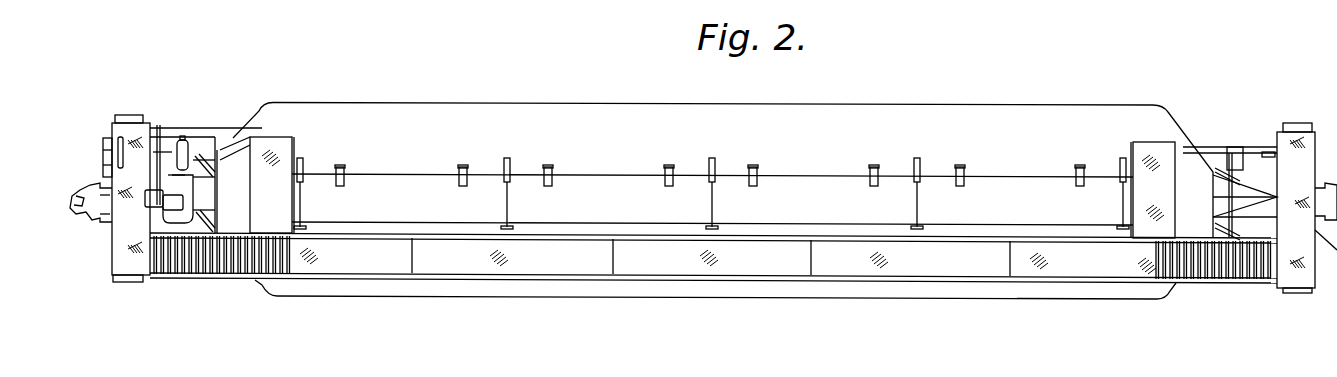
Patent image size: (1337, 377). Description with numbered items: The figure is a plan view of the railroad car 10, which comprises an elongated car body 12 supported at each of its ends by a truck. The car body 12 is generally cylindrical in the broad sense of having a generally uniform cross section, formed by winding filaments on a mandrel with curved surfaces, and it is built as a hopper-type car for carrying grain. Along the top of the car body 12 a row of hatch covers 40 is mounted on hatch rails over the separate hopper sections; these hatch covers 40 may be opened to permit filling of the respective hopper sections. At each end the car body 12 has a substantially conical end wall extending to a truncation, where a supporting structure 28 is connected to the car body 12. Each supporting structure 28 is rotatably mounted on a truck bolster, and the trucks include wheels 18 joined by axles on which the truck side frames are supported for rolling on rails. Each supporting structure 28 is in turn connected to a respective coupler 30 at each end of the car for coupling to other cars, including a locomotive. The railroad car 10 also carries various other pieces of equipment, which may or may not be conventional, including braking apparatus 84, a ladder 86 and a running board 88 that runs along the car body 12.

The railroad car 10 is at (406, 305).
The car body 12 is at (508, 297).
The wheels 18 is at (166, 145).
The supporting structure 28 is at (196, 214).
The coupler 30 is at (90, 217).
The hatch covers 40 is at (423, 210).
The braking apparatus 84 is at (162, 122).
The ladder 86 is at (194, 262).
The running board 88 is at (584, 268).